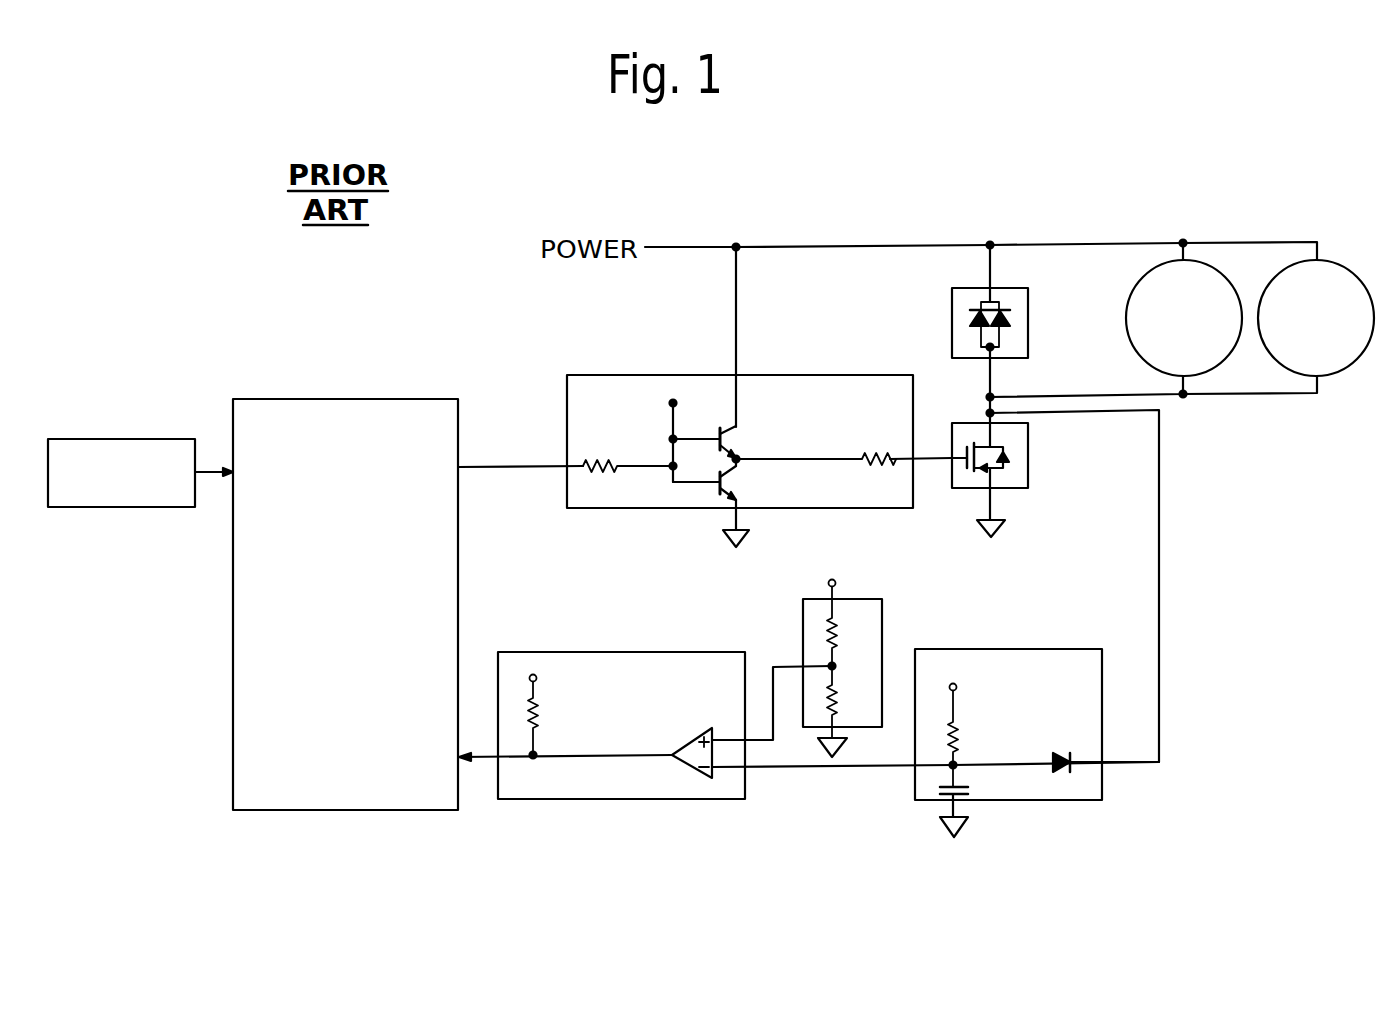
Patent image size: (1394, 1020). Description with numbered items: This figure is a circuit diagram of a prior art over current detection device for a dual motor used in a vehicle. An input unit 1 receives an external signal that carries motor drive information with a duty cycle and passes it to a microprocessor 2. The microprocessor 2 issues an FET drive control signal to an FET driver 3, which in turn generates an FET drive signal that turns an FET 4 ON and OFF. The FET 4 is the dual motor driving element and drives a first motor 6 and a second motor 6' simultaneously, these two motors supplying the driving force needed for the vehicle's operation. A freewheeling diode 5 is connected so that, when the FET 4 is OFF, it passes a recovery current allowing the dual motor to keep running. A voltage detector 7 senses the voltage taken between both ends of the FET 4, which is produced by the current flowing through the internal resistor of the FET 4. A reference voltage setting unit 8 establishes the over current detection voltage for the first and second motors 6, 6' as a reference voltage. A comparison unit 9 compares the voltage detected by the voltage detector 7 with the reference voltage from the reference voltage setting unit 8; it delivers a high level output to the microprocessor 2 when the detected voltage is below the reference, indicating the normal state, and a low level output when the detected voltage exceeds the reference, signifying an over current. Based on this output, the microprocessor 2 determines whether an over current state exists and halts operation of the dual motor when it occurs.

The input unit 1 is at (112, 439).
The microprocessor 2 is at (338, 398).
The FET driver 3 is at (880, 375).
The FET 4 is at (1030, 442).
The freewheeling diode 5 is at (1030, 312).
The first motor 6 is at (1184, 283).
The second motor 6' is at (1316, 283).
The voltage detector 7 is at (1068, 649).
The reference voltage setting unit 8 is at (858, 599).
The comparison unit 9 is at (698, 652).